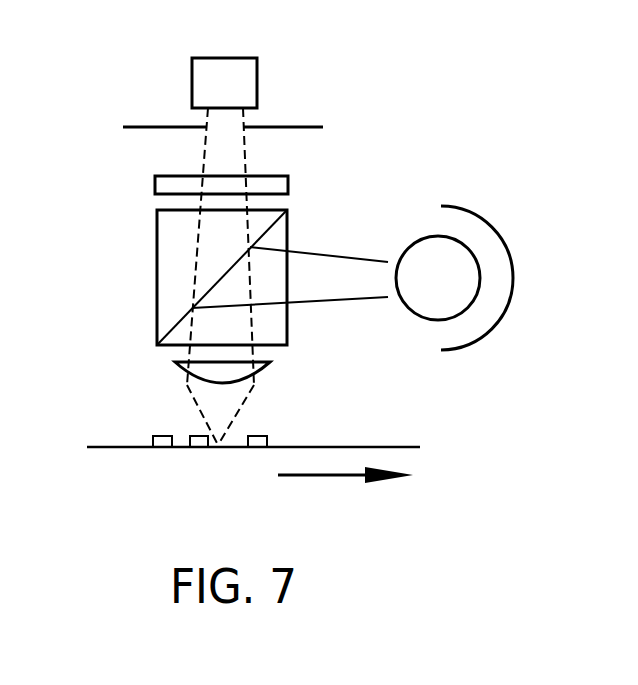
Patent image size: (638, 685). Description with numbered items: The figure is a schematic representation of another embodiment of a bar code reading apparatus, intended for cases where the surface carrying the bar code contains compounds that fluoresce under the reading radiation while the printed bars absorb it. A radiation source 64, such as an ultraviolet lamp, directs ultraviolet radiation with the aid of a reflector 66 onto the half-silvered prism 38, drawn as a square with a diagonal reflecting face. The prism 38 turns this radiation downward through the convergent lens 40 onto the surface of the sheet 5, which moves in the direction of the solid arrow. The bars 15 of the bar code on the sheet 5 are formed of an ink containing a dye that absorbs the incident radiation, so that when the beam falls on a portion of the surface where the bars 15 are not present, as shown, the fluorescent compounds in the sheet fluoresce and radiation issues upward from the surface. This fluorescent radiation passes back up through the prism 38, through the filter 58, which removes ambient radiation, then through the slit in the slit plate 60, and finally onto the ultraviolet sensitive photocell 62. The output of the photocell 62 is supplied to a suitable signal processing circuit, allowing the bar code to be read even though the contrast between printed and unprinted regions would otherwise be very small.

The ultraviolet sensitive photocell 62 is at (194, 67).
The aperture plate 60 is at (308, 127).
The filter 58 is at (288, 177).
The half-silvered prism 38 is at (157, 277).
The convergent lens 40 is at (176, 362).
The radiation source 64 is at (441, 236).
The reflector 66 is at (477, 340).
The sheet 5 is at (134, 446).
The bars 15 is at (259, 435).